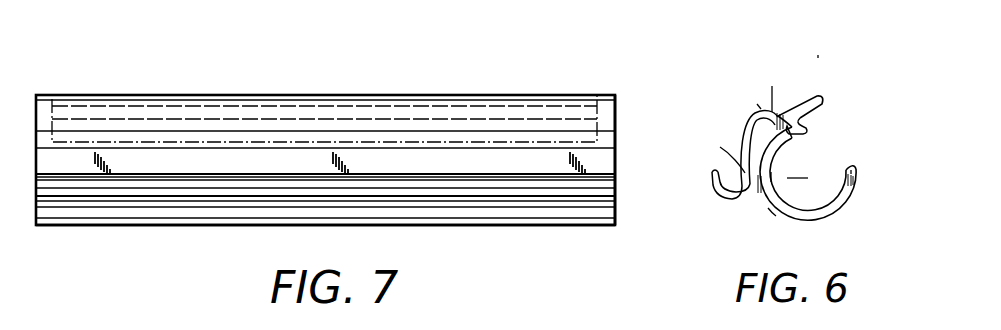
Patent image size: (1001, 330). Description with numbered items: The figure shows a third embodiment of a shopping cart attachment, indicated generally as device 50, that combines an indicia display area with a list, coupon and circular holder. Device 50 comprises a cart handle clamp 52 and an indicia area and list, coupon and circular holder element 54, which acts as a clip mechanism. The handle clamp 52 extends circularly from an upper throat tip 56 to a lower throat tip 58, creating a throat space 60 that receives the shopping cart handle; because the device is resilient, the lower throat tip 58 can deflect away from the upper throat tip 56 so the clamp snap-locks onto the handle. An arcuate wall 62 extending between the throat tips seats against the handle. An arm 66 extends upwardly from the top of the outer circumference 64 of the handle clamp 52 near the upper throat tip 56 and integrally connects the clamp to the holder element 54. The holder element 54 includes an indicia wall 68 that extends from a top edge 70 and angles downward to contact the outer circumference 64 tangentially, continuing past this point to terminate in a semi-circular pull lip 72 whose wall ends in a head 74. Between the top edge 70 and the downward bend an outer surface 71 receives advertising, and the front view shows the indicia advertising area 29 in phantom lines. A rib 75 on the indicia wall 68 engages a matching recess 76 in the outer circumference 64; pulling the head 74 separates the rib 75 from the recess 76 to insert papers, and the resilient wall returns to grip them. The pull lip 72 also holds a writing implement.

In FIG. 7, the indicia advertising area 29 is at (597, 108).
In FIG. 7, the device 50 is at (231, 244).
In FIG. 6, the device 50 is at (818, 64).
In FIG. 7, the cart handle clamp 52 is at (622, 120).
In FIG. 6, the cart handle clamp 52 is at (761, 109).
In FIG. 6, the indicia area and list, coupon and circular holder element 54 is at (805, 221).
In FIG. 6, the upper throat tip 56 is at (830, 108).
In FIG. 6, the lower throat tip 58 is at (850, 174).
In FIG. 6, the throat space 60 is at (803, 168).
In FIG. 6, the arcuate wall 62 is at (770, 212).
In FIG. 6, the outer circumference 64 is at (760, 122).
In FIG. 6, the arm 66 is at (772, 86).
In FIG. 6, the indicia wall 68 is at (740, 124).
In FIG. 6, the top edge 70 is at (821, 92).
In FIG. 6, the outer surface 71 is at (806, 97).
In FIG. 6, the semi-circular pull lip 72 is at (737, 196).
In FIG. 6, the head 74 is at (712, 168).
In FIG. 6, the rib 75 is at (719, 146).
In FIG. 6, the recess 76 is at (772, 181).